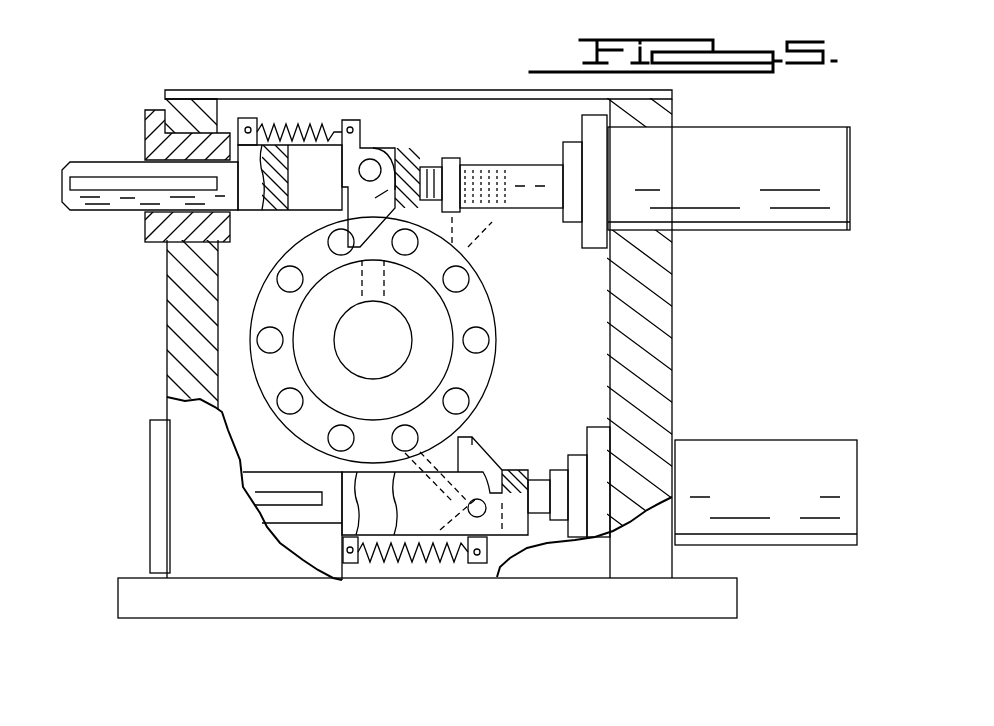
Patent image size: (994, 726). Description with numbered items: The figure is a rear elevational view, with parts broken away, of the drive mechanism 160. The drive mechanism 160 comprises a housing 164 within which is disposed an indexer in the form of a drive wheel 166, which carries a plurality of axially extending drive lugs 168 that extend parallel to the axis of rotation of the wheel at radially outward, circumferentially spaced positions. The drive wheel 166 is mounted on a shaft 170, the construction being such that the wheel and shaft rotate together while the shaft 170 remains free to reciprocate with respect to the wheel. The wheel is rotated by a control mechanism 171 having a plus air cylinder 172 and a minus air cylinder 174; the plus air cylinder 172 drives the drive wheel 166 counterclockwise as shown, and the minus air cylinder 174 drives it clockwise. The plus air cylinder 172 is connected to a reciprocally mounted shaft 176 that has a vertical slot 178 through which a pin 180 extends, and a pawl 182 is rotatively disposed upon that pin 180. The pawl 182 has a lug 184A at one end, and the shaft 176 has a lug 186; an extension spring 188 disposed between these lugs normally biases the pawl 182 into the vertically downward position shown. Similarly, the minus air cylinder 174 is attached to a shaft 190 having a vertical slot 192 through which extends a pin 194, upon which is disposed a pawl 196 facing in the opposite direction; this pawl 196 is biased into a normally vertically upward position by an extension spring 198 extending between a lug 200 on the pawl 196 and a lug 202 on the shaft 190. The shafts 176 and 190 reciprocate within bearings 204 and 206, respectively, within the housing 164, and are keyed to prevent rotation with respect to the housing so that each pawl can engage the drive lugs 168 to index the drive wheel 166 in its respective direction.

The drive mechanism 160 is at (158, 92).
The housing 164 is at (178, 313).
The drive wheel 166 is at (467, 303).
The drive lugs 168 is at (268, 336).
The shaft 170 is at (396, 347).
The control mechanism 171 is at (771, 417).
The plus air cylinder 172 is at (752, 185).
The minus air cylinder 174 is at (790, 498).
The shaft 176 is at (96, 167).
The vertical slot 178 is at (313, 160).
The pin 180 is at (370, 160).
The pawl 182 is at (427, 162).
The pawl cam 184A is at (363, 119).
The lug 186 is at (250, 117).
The extension spring 188 is at (294, 124).
The shaft 190 is at (308, 516).
The vertical slot 192 is at (383, 516).
The pin 194 is at (484, 510).
The pawl 196 is at (474, 452).
The extension spring 198 is at (423, 565).
The lug 200 is at (477, 565).
The lug 202 is at (345, 578).
The bearing 204 is at (163, 222).
The bearing 206 is at (160, 467).